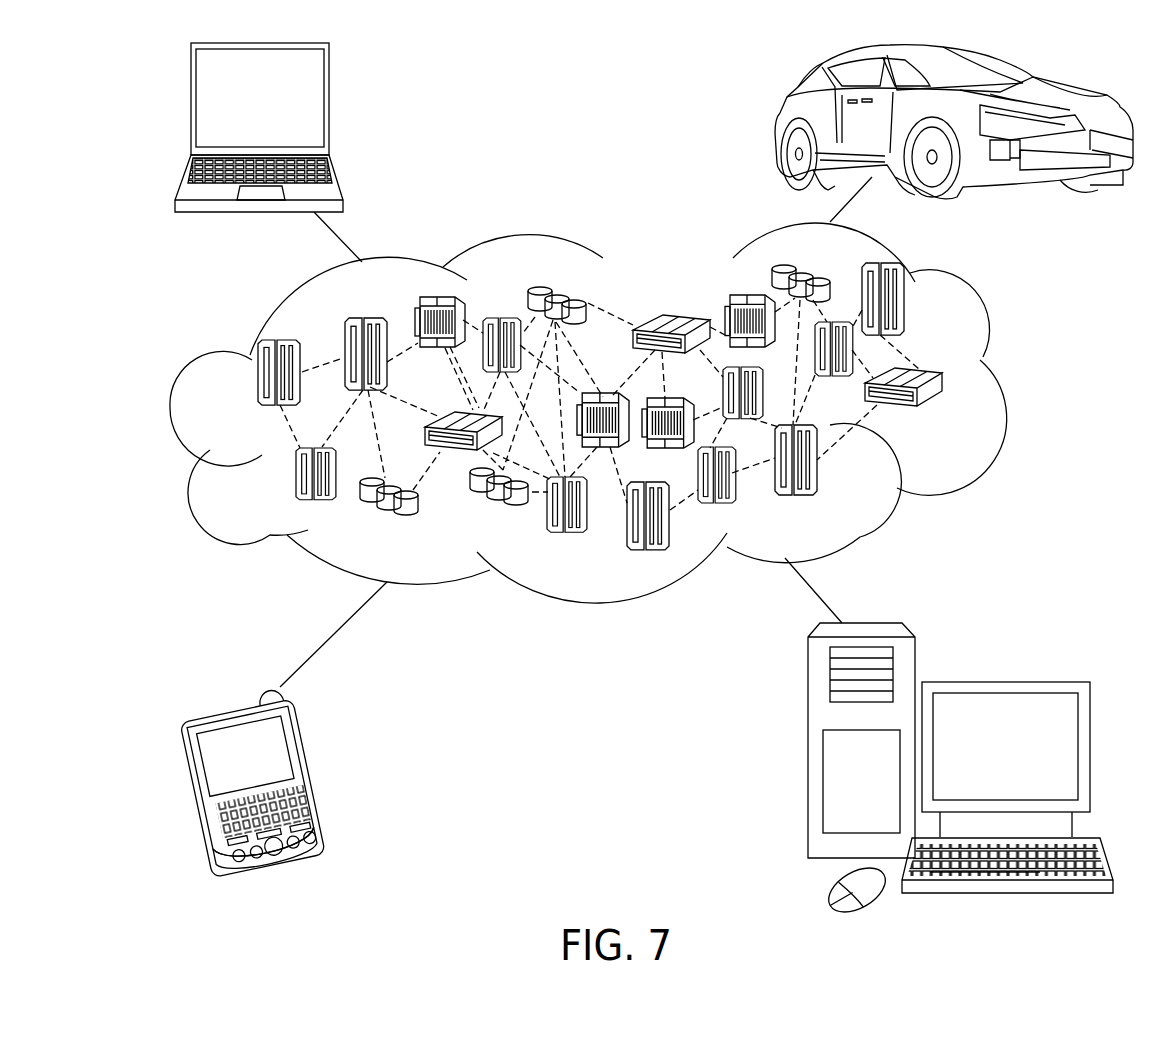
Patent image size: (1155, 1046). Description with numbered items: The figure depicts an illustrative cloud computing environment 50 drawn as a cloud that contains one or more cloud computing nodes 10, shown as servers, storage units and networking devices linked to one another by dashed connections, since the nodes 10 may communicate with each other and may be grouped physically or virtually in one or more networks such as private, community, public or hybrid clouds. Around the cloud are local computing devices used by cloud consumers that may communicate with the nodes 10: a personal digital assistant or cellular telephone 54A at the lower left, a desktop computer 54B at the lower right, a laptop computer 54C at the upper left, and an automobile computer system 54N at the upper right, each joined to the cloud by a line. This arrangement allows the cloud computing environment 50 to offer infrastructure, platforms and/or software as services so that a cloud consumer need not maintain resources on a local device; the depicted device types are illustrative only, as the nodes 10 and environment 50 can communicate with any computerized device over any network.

The cloud computing environment 50 is at (1005, 383).
The cloud computing nodes 10 is at (945, 417).
The personal digital assistant (PDA) or cellular telephone 54A is at (318, 778).
The desktop computer 54B is at (1002, 680).
The laptop computer 54C is at (330, 106).
The automobile computer system 54N is at (777, 93).